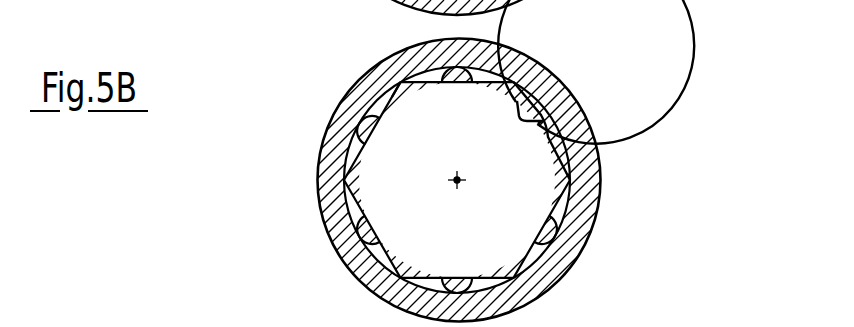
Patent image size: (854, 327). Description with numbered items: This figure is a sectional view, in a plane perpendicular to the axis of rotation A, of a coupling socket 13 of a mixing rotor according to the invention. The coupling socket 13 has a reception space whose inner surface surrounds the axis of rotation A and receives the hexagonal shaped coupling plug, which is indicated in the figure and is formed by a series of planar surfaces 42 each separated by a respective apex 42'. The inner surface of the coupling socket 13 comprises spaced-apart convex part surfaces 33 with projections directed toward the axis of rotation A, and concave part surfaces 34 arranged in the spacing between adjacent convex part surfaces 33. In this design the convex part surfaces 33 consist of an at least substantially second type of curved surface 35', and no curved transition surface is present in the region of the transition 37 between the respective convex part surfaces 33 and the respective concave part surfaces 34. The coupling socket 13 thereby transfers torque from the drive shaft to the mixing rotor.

The concave part surfaces 34 is at (570, 193).
The convex part surfaces 33 is at (553, 123).
The planar surfaces 42 is at (429, 141).
The apex 42' is at (355, 65).
The transition 37 is at (563, 136).
The coupling socket 13 is at (541, 114).
The second type of curved surface 35' is at (548, 66).
The axis of rotation A is at (461, 184).